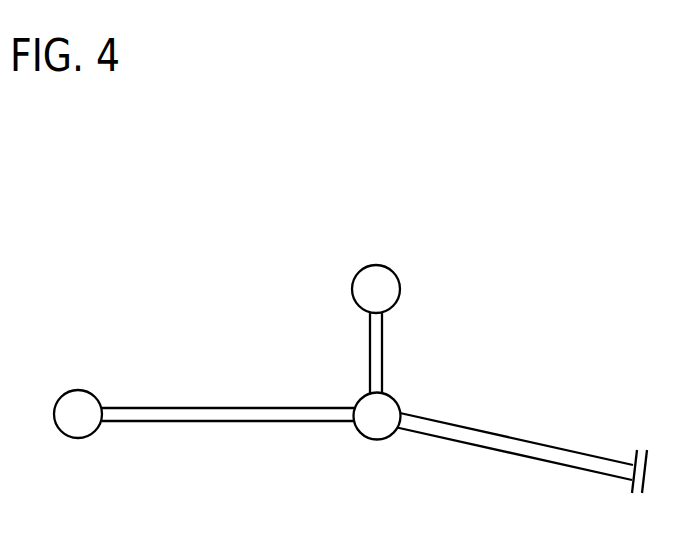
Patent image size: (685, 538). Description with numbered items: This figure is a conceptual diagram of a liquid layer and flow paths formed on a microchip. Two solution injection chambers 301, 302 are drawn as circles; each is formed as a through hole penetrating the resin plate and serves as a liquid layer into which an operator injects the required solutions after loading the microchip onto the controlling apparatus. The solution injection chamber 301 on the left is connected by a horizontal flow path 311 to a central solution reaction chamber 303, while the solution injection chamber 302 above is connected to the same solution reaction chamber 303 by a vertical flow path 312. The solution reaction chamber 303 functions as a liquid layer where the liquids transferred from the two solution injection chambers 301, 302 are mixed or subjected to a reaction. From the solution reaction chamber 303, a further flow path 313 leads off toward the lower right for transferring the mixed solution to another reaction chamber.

The solution injection chamber 301 is at (95, 398).
The solution injection chamber 302 is at (390, 278).
The solution reaction chamber 303 is at (378, 439).
The flow path 311 is at (228, 408).
The flow path 312 is at (378, 348).
The flow path 313 is at (512, 440).